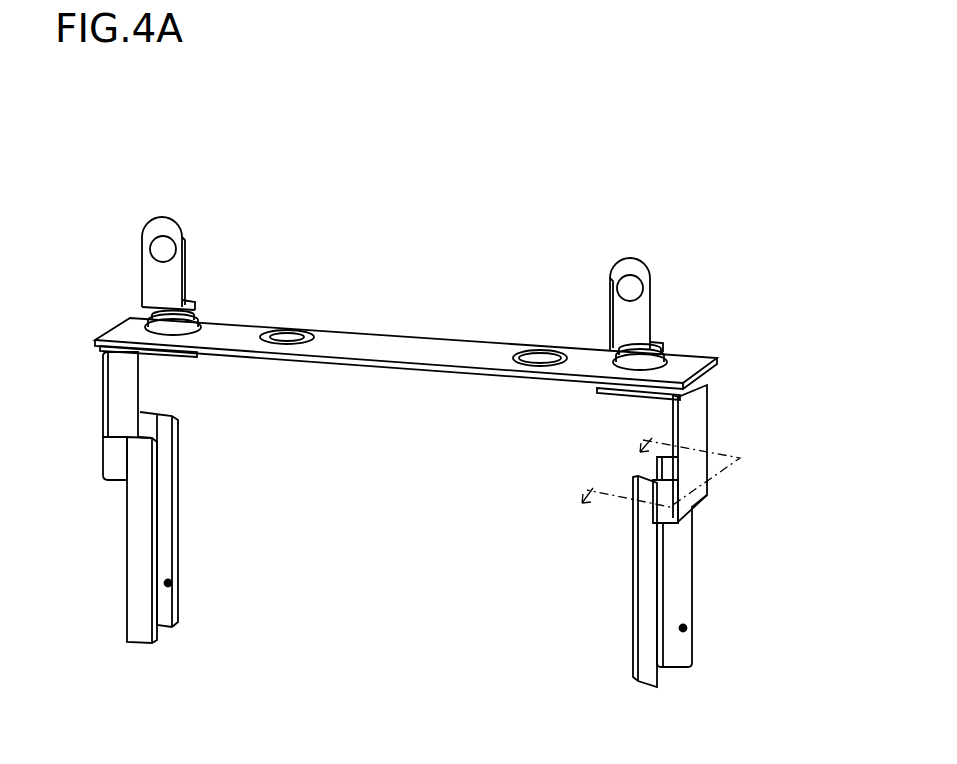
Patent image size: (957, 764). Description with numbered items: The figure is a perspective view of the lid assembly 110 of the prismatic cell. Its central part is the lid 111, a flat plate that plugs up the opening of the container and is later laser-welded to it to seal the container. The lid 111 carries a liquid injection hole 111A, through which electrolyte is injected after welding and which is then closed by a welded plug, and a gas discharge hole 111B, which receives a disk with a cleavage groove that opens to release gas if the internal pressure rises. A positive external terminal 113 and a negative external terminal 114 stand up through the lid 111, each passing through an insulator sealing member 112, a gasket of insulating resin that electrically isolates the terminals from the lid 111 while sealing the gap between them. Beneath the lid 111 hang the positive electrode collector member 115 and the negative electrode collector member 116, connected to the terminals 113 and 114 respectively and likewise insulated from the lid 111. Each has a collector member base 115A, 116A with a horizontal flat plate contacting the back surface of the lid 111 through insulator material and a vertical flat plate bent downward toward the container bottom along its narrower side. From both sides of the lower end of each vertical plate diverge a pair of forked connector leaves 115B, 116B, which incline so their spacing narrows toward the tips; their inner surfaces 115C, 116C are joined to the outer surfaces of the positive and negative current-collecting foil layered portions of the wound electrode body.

The lid assembly 110 is at (514, 244).
The lid 111 is at (392, 340).
The liquid injection hole 111A is at (540, 346).
The gas discharge hole 111B is at (292, 330).
The insulator sealing member 112 is at (147, 323).
The positive external terminal 113 is at (150, 220).
The negative external terminal 114 is at (643, 262).
The positive electrode collector member 115 is at (87, 466).
The collector member base 115A is at (118, 382).
The forked connector leaves 115B is at (180, 497).
The inner surfaces 115C is at (147, 437).
The negative electrode collector member 116 is at (749, 513).
The collector member base 116A is at (700, 428).
The forked connector leaves 116B is at (635, 565).
The inner surfaces 116C is at (683, 628).